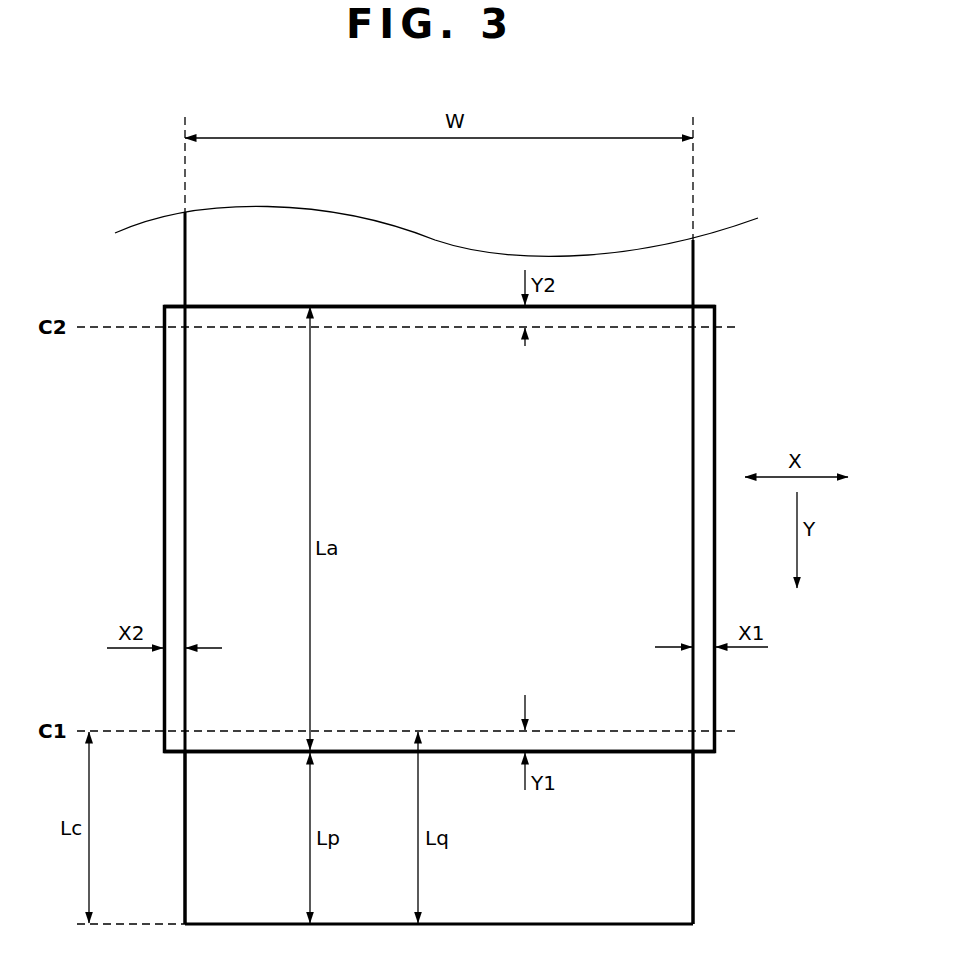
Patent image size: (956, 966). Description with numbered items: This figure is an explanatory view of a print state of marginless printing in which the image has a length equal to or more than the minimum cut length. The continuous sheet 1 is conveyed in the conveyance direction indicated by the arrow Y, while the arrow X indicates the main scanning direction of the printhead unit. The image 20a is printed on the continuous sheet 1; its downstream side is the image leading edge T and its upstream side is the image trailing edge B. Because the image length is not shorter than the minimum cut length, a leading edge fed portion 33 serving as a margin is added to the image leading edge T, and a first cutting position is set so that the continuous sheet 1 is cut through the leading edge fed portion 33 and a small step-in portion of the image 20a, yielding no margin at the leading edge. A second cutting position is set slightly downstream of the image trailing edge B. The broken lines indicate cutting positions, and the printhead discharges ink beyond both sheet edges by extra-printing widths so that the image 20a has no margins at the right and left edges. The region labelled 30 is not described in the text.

The continuous sheet 1 is at (436, 251).
The image 20a is at (653, 402).
The frame region 30 is at (174, 884).
The leading edge fed portion 33 is at (653, 848).
The image trailing edge B is at (251, 305).
The image leading edge T is at (265, 753).